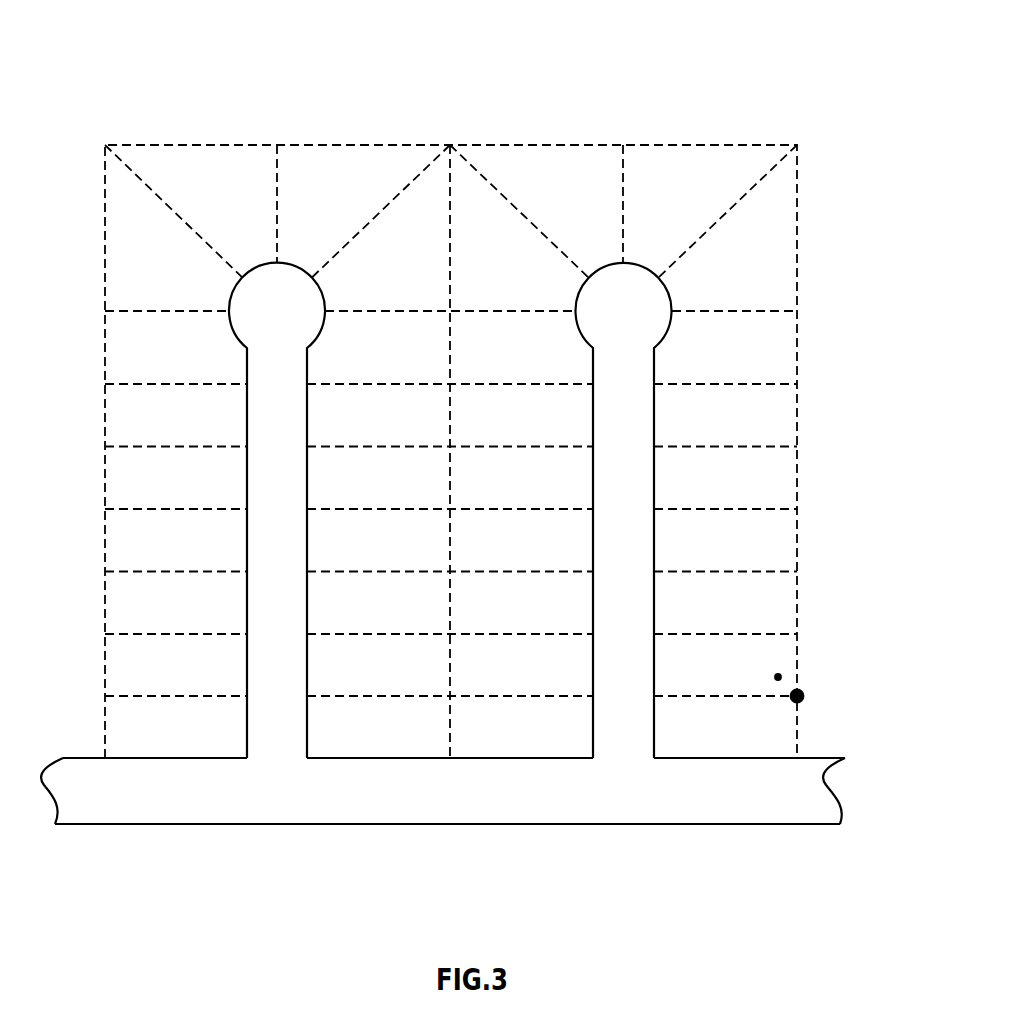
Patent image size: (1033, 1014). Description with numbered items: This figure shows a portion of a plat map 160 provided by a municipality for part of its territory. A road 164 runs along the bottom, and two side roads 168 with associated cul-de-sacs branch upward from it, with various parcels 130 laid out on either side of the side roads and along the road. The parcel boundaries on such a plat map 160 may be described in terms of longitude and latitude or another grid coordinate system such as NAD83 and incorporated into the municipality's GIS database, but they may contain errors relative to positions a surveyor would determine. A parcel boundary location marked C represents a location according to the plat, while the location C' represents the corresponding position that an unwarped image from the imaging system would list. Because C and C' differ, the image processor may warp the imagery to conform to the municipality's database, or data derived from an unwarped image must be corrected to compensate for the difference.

The plat map 160 is at (749, 112).
The side roads 168 is at (645, 551).
The parcels 130 is at (737, 611).
The road 164 is at (330, 806).
The parcel boundary location C is at (846, 659).
The location from unwarped image C' is at (813, 644).